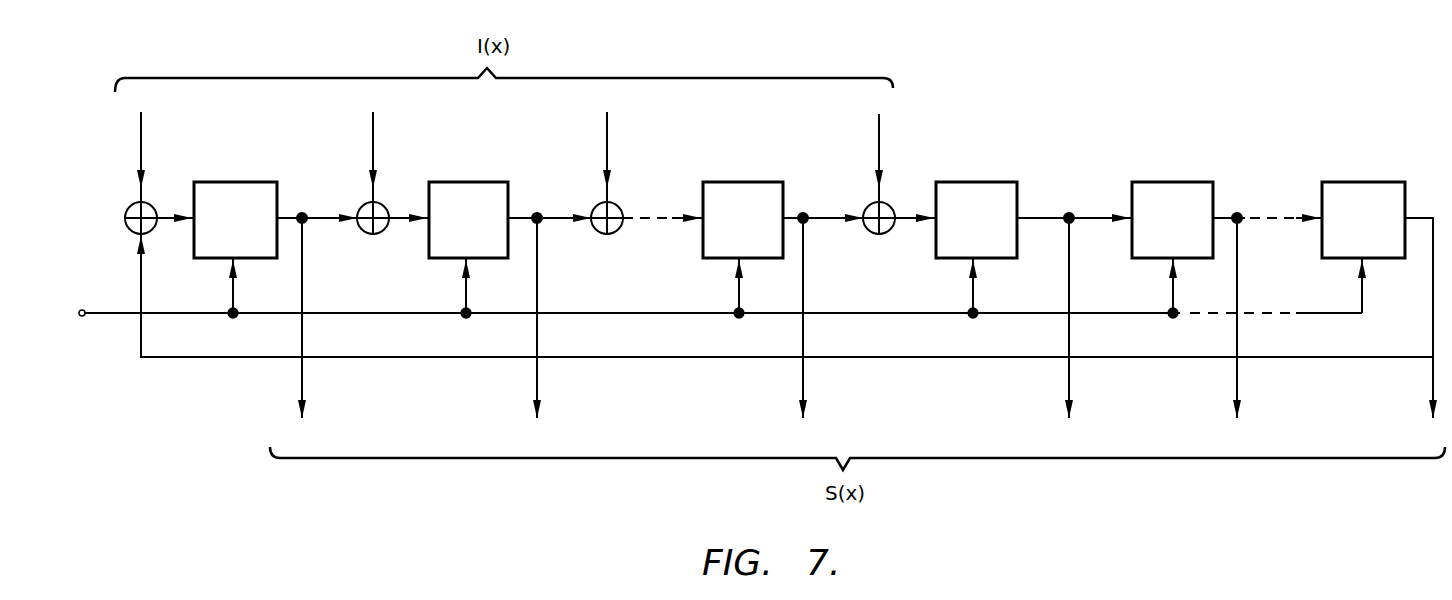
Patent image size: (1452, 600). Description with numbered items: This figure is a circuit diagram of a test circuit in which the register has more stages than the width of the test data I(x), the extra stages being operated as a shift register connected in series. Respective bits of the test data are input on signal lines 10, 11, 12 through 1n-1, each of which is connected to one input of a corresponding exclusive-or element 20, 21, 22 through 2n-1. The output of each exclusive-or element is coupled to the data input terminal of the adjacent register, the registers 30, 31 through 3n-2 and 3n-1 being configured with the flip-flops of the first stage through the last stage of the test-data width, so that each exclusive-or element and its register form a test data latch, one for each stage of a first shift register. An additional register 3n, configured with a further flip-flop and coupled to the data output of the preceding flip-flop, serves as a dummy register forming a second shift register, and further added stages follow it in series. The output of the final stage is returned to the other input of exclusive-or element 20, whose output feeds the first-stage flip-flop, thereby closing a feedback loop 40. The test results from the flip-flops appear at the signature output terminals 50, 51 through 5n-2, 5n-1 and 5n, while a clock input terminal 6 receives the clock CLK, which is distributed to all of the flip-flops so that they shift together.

The signal line 10 is at (152, 155).
The signal line 11 is at (387, 155).
The signal line 12 is at (621, 155).
The signal line 1n-1 is at (904, 155).
The exclusive-or element 20 is at (150, 230).
The exclusive-or element 21 is at (383, 230).
The exclusive-or element 22 is at (617, 231).
The exclusive-or element 2n-1 is at (889, 231).
The register 30 is at (255, 182).
The register 31 is at (491, 182).
The register 3n-2 is at (765, 182).
The register 3n-1 is at (1000, 182).
The register 3n is at (1200, 182).
The feedback loop 40 is at (220, 358).
The signature output terminal 50 is at (315, 323).
The signature output terminal 51 is at (551, 324).
The signature output terminal 5n-2 is at (828, 323).
The signature output terminal 5n-1 is at (1093, 323).
The signature output terminal 5n is at (1251, 323).
The clock input terminal 6 is at (101, 315).